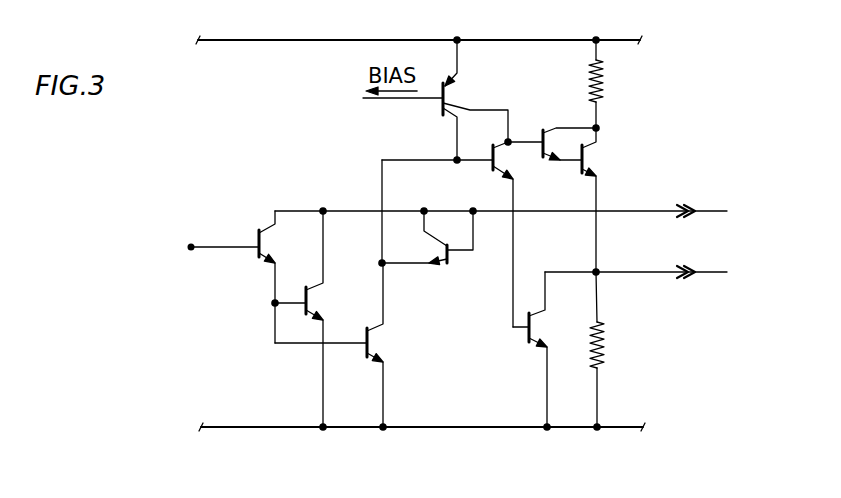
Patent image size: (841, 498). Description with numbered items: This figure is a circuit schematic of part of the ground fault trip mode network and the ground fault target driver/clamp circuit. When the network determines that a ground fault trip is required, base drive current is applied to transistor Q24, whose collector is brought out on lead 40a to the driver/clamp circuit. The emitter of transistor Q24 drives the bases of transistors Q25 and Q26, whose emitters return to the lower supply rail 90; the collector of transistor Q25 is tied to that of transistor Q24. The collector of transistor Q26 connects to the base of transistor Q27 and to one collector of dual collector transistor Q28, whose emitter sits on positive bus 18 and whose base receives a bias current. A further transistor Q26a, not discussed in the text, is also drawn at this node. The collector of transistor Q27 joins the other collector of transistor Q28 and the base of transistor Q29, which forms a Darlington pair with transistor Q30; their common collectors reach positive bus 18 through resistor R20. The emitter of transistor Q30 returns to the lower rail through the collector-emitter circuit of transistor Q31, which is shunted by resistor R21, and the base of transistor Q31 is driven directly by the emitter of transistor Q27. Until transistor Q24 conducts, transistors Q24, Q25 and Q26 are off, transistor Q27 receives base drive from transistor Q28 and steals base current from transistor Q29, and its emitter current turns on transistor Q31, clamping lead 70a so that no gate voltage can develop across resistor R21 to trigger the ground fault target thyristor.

The positive bus 18 is at (253, 40).
The ground / negative supply rail 90 is at (250, 429).
The lead 40a is at (715, 209).
The lead 70a is at (715, 270).
The transistor Q24 is at (262, 258).
The transistor Q25 is at (312, 303).
The transistor Q26 is at (372, 343).
The diode-connected transistor Q26a is at (440, 259).
The transistor Q27 is at (496, 172).
The dual collector transistor Q28 is at (447, 87).
The transistor Q29 is at (546, 128).
The transistor Q30 is at (598, 162).
The transistor Q31 is at (536, 339).
The resistor R20 is at (605, 86).
The resistor R21 is at (612, 343).